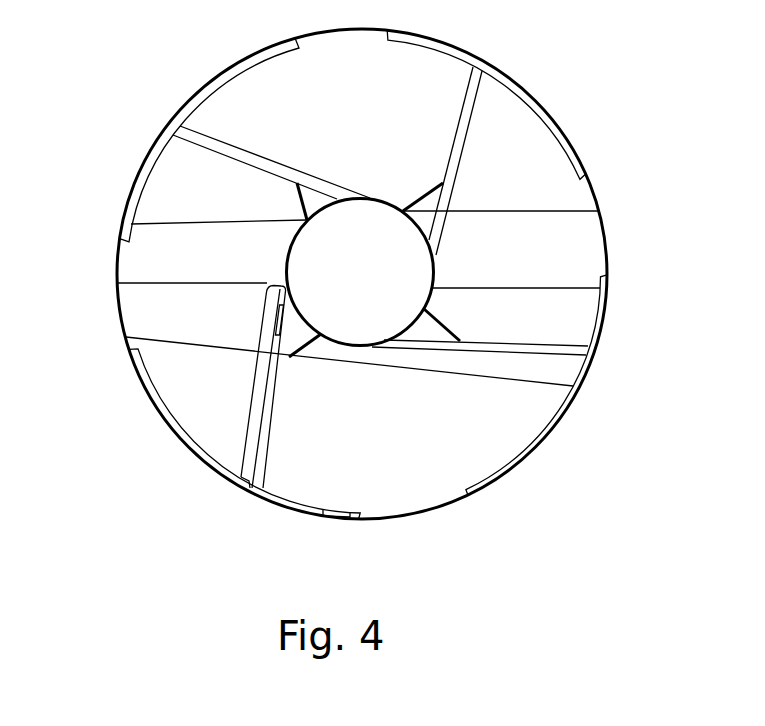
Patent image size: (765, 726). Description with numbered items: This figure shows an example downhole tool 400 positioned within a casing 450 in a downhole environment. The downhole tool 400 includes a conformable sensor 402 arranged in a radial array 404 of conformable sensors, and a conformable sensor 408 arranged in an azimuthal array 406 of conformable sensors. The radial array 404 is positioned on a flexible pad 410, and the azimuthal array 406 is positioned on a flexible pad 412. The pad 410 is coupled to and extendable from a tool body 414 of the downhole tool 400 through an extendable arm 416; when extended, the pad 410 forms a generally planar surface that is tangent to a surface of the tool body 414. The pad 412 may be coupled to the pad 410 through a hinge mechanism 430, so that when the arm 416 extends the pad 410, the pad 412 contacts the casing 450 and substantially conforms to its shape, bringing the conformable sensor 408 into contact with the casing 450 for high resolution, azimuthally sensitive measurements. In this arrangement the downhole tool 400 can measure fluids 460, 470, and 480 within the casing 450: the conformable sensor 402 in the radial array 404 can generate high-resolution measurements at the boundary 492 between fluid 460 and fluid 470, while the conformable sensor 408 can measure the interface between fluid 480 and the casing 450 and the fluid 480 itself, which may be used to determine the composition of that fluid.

The downhole tool 400 is at (432, 242).
The conformable sensor 402 is at (280, 320).
The radial array 404 is at (257, 372).
The azimuthal array 406 is at (181, 459).
The conformable sensor 408 is at (330, 523).
The flexible pad 410 is at (268, 436).
The flexible pad 412 is at (167, 423).
The tool body 414 is at (336, 197).
The extendable arm 416 is at (300, 362).
The hinge mechanism 430 is at (253, 490).
The casing 450 is at (145, 153).
The fluid 460 is at (583, 242).
The fluid 470 is at (575, 314).
The fluid 480 is at (433, 463).
The boundary 492 is at (532, 289).